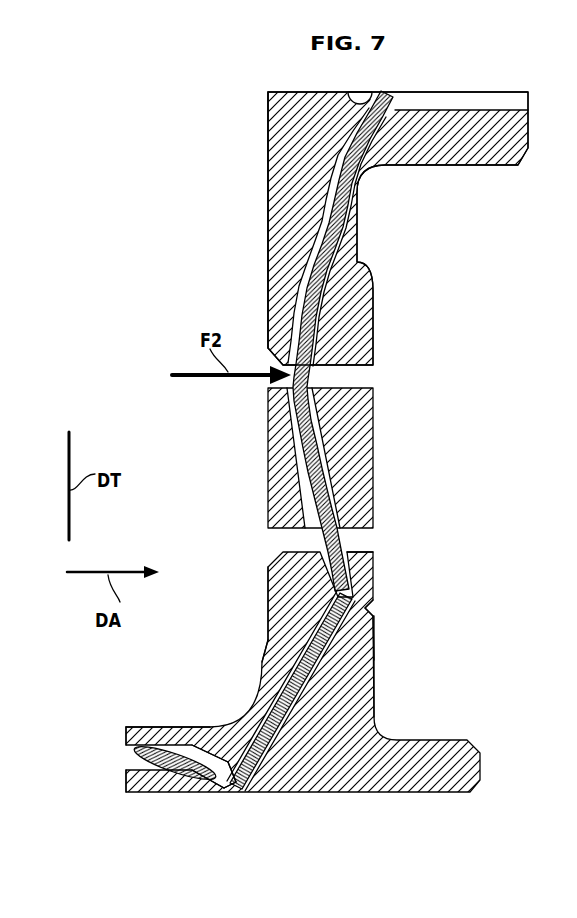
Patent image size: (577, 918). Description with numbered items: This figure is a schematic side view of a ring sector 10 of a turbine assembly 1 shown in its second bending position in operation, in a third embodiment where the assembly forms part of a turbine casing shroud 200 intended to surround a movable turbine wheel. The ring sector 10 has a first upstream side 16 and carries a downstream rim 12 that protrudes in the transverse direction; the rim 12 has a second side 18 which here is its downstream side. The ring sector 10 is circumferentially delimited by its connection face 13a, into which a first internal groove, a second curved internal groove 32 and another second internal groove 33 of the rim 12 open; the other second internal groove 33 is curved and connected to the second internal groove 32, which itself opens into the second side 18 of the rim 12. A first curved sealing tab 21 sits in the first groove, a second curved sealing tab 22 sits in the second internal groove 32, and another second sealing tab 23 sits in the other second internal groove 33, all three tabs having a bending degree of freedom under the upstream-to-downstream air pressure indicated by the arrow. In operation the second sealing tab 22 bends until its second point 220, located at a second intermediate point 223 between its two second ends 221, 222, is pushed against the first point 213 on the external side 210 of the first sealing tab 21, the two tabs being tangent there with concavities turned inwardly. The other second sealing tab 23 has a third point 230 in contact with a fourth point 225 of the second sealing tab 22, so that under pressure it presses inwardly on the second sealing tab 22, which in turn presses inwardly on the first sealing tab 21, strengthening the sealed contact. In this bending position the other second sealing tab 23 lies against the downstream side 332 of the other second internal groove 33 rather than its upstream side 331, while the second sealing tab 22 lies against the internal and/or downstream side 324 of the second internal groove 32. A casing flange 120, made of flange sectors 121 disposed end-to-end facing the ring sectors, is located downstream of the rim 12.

The turbine assembly 1 is at (116, 311).
The ring sector 10 is at (303, 690).
The downstream rim 12 is at (295, 140).
The connection face 13a is at (324, 458).
The first upstream side 16 is at (124, 759).
The second side of the rim 18 is at (371, 637).
The first curved sealing tab 21 is at (200, 773).
The second curved sealing tab 22 is at (320, 707).
The other second sealing tab 23 is at (322, 242).
The second curved internal groove 32 is at (303, 657).
The other second internal groove 33 is at (323, 203).
The casing flange 120 is at (305, 127).
The flange sector 121 is at (152, 732).
The turbine casing shroud 200 is at (295, 175).
The external side of the first sealing tab 210 is at (199, 754).
The first point 213 is at (232, 777).
The second point 220 is at (228, 758).
The second end 221 is at (305, 782).
The second end 222 is at (287, 576).
The second intermediate point 223 is at (232, 772).
The fourth point 225 is at (350, 601).
The third point 230 is at (372, 562).
The internal and/or downstream side of the second internal groove 324 is at (315, 697).
The upstream side of the other second internal groove 331 is at (282, 452).
The downstream side of the other second internal groove 332 is at (315, 288).